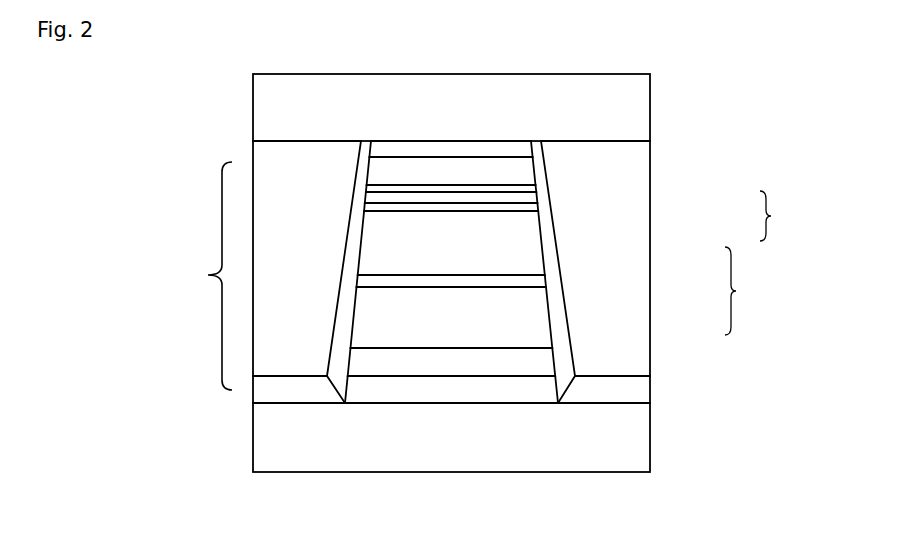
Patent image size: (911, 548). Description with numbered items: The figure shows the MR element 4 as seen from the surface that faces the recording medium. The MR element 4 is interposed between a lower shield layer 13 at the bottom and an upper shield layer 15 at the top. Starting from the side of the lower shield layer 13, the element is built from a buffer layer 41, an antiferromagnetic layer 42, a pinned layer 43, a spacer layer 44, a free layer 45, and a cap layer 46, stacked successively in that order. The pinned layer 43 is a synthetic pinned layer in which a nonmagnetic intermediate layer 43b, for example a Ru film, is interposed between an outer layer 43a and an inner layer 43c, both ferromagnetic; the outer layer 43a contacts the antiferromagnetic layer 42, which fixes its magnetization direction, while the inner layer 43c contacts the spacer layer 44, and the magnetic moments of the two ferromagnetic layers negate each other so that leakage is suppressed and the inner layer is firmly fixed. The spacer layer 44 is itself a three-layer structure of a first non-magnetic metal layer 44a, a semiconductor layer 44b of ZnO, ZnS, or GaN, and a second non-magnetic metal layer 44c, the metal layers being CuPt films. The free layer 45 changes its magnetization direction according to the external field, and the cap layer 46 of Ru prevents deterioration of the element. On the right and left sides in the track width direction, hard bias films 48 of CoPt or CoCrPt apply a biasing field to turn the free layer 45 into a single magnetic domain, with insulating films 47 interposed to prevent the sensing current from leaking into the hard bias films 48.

The MR element 4 is at (201, 276).
The lower shield layer 13 is at (422, 438).
The upper shield layer 15 is at (567, 80).
The buffer layer 41 is at (495, 393).
The antiferromagnetic layer 42 is at (546, 357).
The pinned layer 43 is at (743, 291).
The outer layer 43a is at (542, 322).
The nonmagnetic intermediate layer 43b is at (540, 284).
The inner layer 43c is at (534, 248).
The spacer layer 44 is at (777, 216).
The first non-magnetic metal layer 44a is at (526, 205).
The semiconductor layer 44b is at (526, 190).
The second non-magnetic metal layer 44c is at (526, 174).
The free layer 45 is at (526, 151).
The cap layer 46 is at (560, 142).
The insulating film 47 is at (283, 390).
The hard bias film 48 is at (288, 155).